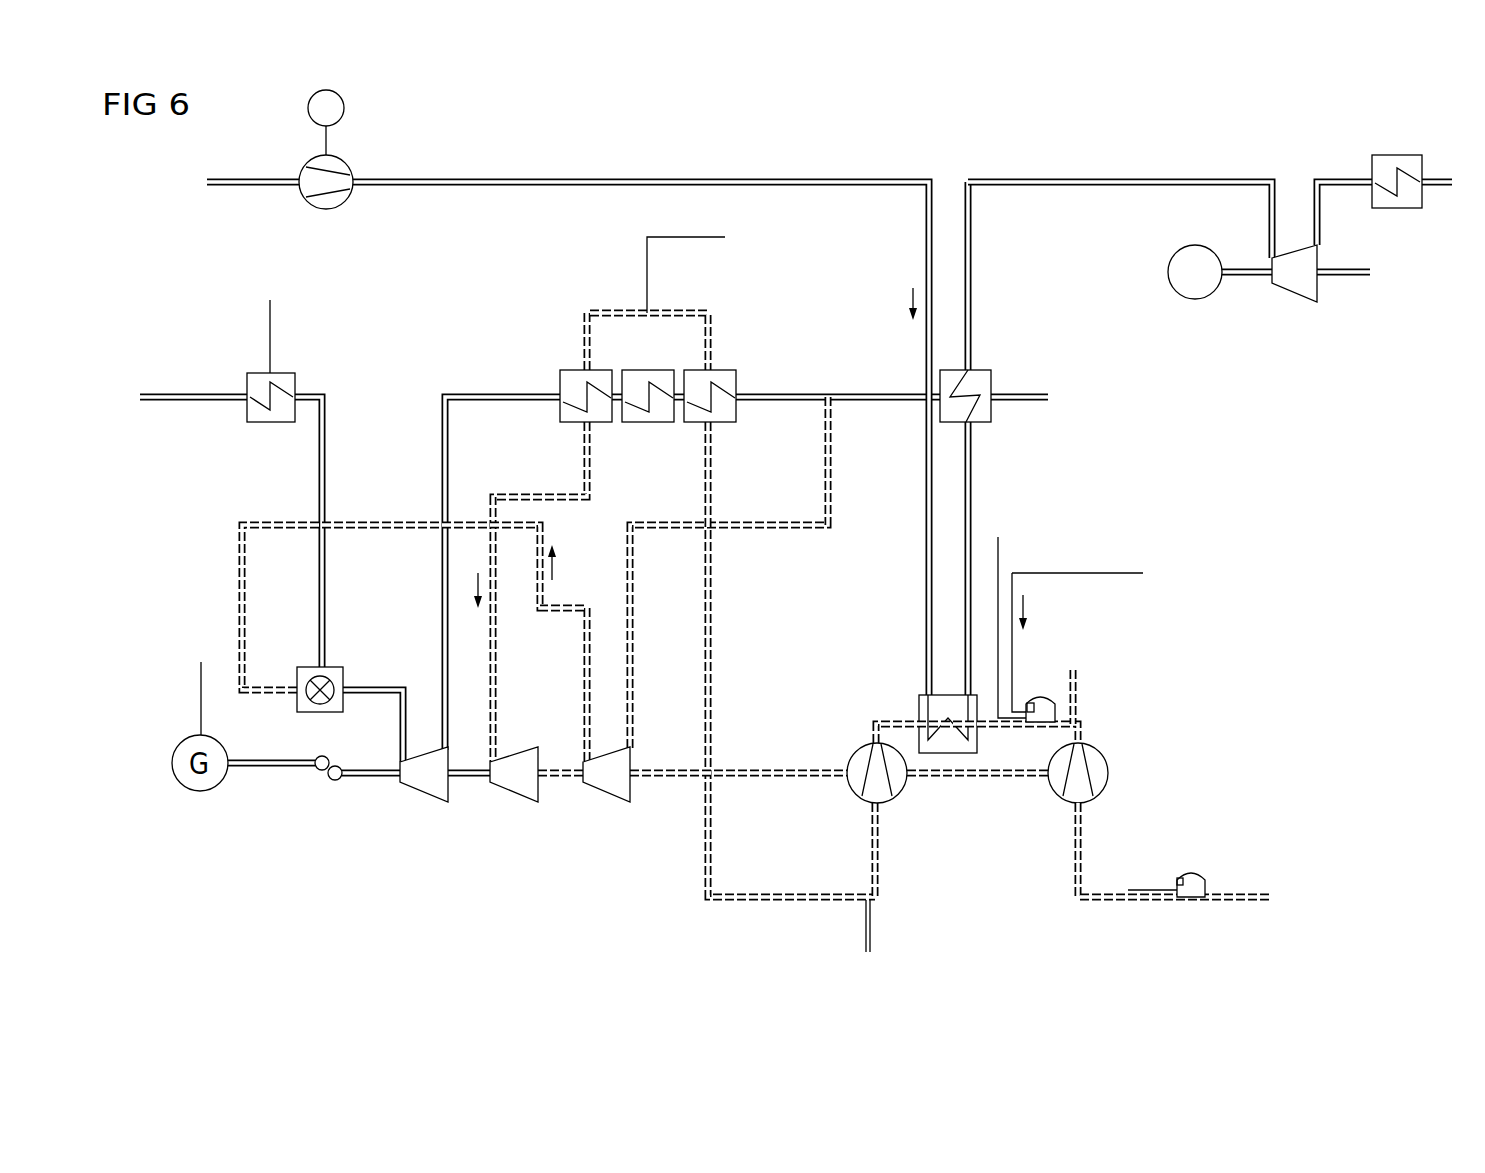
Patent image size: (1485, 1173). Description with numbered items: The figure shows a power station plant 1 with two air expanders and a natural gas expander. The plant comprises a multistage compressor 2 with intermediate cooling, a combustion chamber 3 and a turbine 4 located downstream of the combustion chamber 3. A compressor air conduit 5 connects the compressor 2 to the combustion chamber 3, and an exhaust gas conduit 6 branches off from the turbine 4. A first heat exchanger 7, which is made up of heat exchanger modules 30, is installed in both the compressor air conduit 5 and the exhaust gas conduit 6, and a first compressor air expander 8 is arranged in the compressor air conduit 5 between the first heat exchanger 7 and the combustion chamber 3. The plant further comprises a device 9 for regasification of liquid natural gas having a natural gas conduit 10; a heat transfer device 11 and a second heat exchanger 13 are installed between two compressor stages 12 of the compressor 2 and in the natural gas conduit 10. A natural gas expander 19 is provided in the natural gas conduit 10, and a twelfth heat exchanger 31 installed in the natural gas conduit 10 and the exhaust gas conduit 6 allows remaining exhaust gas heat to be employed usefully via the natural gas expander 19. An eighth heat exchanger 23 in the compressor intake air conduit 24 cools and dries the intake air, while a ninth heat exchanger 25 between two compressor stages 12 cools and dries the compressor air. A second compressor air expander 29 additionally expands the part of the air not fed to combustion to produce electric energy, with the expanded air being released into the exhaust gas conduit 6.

The power station plant 1 is at (1220, 262).
The multistage compressor 2 is at (1058, 825).
The combustion chamber 3 is at (331, 665).
The turbine 4 is at (427, 797).
The compressor air conduit 5 is at (369, 522).
The exhaust gas conduit 6 is at (466, 393).
The first heat exchanger 7 is at (656, 355).
The first compressor air expander 8 is at (514, 797).
The device for regasification of liquid natural gas 9 is at (568, 382).
The natural gas conduit 10 is at (618, 178).
The heat transfer device 11 is at (1068, 593).
The compressor stages 12 is at (888, 804).
The second heat exchanger 13 is at (951, 755).
The natural gas expander 19 is at (1291, 295).
The eighth heat exchanger 23 is at (1198, 870).
The compressor intake air conduit 24 is at (1243, 900).
The ninth heat exchanger 25 is at (1043, 697).
The second compressor air expander 29 is at (608, 797).
The heat exchanger modules 30 is at (724, 368).
The twelfth heat exchanger 31 is at (992, 378).